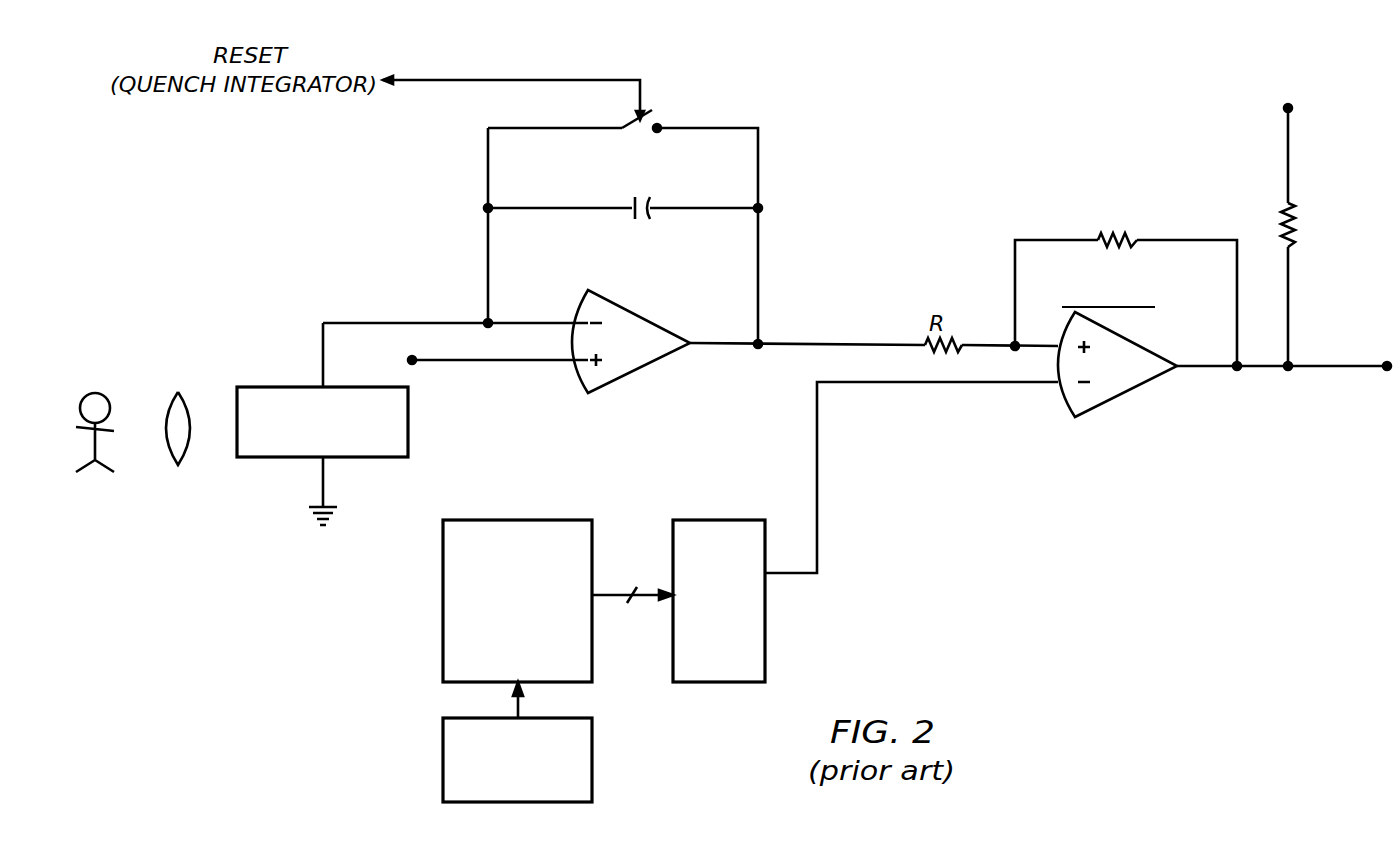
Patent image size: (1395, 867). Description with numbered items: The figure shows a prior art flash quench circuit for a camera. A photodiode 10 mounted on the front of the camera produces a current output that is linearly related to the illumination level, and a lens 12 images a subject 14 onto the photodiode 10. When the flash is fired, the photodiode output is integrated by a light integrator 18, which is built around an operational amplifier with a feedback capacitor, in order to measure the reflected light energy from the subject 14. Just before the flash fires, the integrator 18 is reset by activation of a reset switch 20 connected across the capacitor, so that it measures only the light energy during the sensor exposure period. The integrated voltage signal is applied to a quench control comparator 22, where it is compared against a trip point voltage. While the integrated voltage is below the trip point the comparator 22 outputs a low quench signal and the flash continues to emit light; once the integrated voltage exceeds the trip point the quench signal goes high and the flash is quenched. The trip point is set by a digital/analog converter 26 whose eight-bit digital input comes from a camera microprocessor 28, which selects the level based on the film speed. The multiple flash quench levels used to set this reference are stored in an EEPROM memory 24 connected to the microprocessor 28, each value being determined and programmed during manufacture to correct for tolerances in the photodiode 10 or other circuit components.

The photodiode 10 is at (408, 421).
The lens 12 is at (176, 392).
The subject 14 is at (93, 392).
The light integrator 18 is at (772, 182).
The reset switch 20 is at (631, 135).
The quench control comparator 22 is at (1113, 397).
The EEPROM memory 24 is at (443, 745).
The digital/analog (D/A) converter 26 is at (700, 520).
The camera microprocessor 28 is at (521, 520).